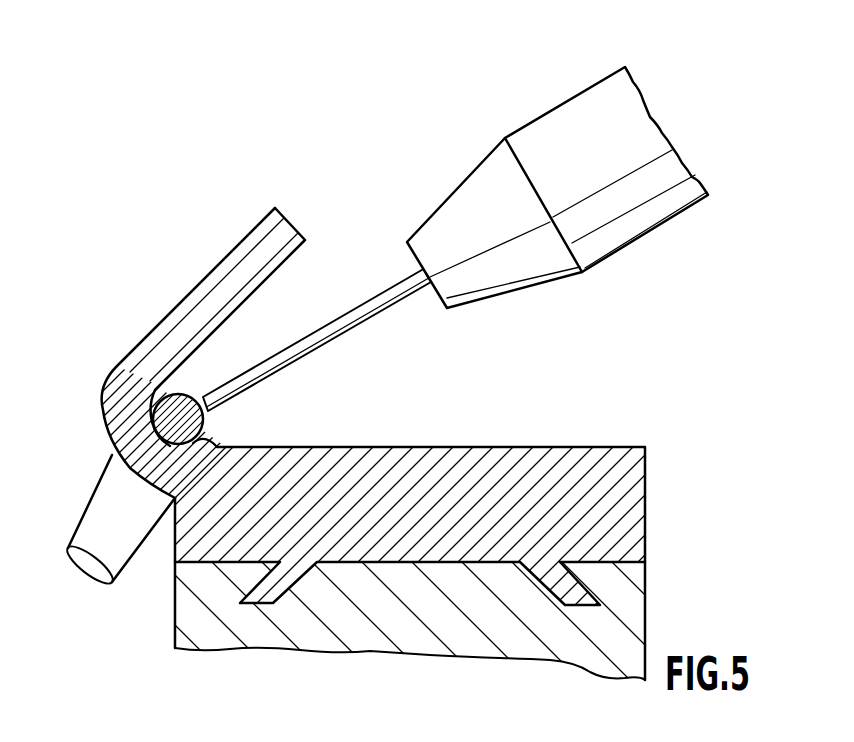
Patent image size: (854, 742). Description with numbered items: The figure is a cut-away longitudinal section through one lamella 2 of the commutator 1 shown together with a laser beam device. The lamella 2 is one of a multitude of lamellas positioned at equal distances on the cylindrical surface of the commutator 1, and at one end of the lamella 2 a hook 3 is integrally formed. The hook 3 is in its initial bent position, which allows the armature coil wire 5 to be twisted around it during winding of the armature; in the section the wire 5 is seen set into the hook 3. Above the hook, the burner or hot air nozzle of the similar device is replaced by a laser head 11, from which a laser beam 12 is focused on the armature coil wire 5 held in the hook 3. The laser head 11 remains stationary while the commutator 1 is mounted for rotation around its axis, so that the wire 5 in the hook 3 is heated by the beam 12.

The commutator 1 is at (433, 527).
The lamella 2 is at (622, 508).
The hook 3 is at (213, 293).
The armature coil wire 5 is at (183, 420).
The laser head 11 is at (530, 267).
The laser beam 12 is at (327, 328).